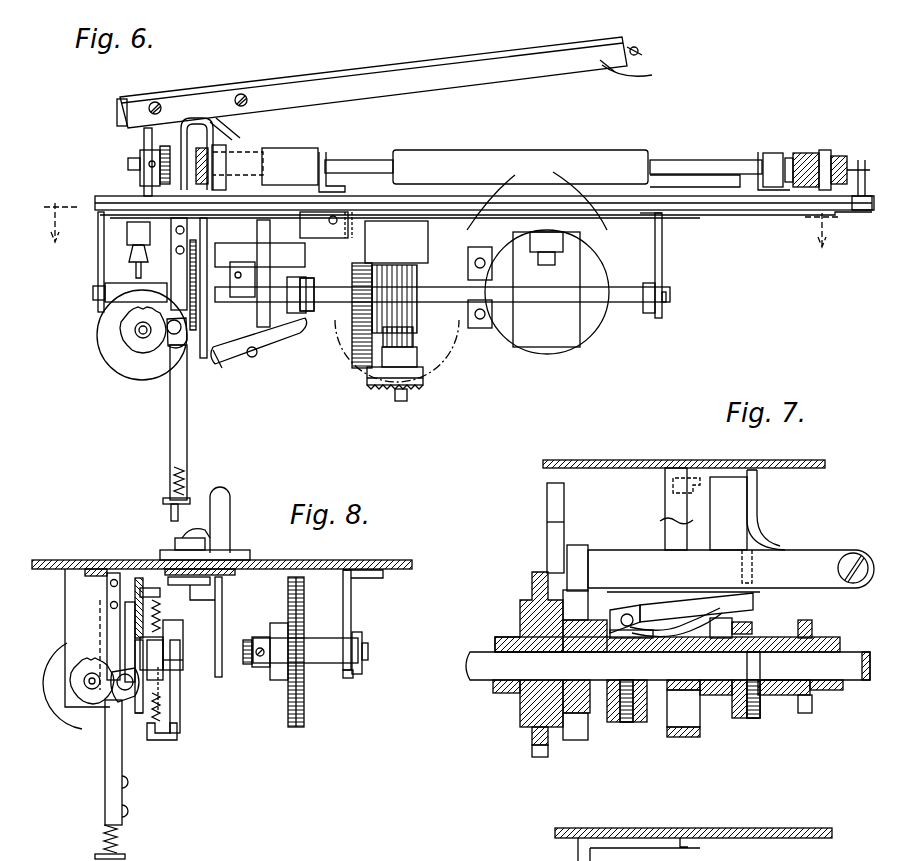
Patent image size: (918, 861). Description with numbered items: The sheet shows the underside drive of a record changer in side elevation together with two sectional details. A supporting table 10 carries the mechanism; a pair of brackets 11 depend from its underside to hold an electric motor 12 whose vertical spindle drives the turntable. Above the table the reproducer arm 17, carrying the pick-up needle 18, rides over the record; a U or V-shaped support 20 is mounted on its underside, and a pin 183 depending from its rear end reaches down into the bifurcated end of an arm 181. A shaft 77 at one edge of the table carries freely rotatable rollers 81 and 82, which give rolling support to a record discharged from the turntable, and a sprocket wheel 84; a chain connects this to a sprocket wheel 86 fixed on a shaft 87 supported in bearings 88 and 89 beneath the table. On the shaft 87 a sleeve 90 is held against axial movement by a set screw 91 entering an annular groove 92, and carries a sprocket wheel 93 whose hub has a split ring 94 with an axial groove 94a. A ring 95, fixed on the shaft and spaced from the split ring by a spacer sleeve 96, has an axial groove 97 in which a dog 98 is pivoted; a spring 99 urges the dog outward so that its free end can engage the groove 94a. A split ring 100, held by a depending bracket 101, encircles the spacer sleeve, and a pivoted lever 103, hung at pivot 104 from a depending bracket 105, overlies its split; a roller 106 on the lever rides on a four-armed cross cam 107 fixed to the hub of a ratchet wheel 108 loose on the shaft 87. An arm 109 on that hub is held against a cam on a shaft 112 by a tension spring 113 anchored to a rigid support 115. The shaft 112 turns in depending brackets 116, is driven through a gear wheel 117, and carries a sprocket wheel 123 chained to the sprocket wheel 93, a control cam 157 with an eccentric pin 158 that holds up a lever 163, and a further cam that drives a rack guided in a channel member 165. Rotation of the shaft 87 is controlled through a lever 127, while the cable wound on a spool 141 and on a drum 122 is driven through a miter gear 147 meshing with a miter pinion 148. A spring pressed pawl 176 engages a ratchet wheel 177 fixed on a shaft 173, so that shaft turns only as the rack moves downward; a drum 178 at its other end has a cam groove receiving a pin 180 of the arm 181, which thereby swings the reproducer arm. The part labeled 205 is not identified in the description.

In FIG. 6, the reproducer arm 17 is at (440, 72).
In FIG. 6, the pick-up needle 18 is at (637, 69).
In FIG. 6, the U or V-shaped support 20 is at (280, 142).
In FIG. 6, the supporting table 10 is at (305, 386).
In FIG. 8, the supporting table 10 is at (400, 562).
In FIG. 6, the brackets 11 is at (537, 194).
In FIG. 8, the brackets 11 is at (92, 633).
In FIG. 6, the electric motor 12 is at (590, 313).
In FIG. 6, the shaft 77 is at (675, 154).
In FIG. 6, the roller 81 is at (323, 160).
In FIG. 6, the roller 82 is at (565, 155).
In FIG. 6, the sprocket wheel 84 is at (140, 146).
In FIG. 6, the sprocket wheel 86 is at (110, 324).
In FIG. 6, the shaft 87 is at (507, 296).
In FIG. 7, the shaft 87 is at (857, 676).
In FIG. 6, the bearing 88 is at (100, 238).
In FIG. 6, the bearing 89 is at (662, 268).
In FIG. 7, the sleeve 90 is at (826, 692).
In FIG. 7, the set screw 91 is at (752, 682).
In FIG. 7, the annular groove 92 is at (762, 682).
In FIG. 6, the sprocket wheel 93 is at (296, 322).
In FIG. 7, the sprocket wheel 93 is at (806, 714).
In FIG. 7, the split ring 94 is at (736, 696).
In FIG. 7, the axial groove 94a is at (752, 624).
In FIG. 7, the ring 95 is at (645, 723).
In FIG. 7, the spacer sleeve 96 is at (718, 696).
In FIG. 7, the axial groove 97 is at (615, 605).
In FIG. 6, the dog 98 is at (307, 310).
In FIG. 7, the dog 98 is at (718, 600).
In FIG. 7, the spring 99 is at (650, 610).
In FIG. 7, the split ring 100 is at (692, 738).
In FIG. 7, the depending bracket 101 is at (672, 500).
In FIG. 6, the pivoted lever 103 is at (366, 368).
In FIG. 7, the pivoted lever 103 is at (784, 588).
In FIG. 7, the pivot 104 is at (851, 556).
In FIG. 7, the depending bracket 105 is at (752, 505).
In FIG. 7, the roller 106 is at (578, 553).
In FIG. 7, the four-armed cross cam 107 is at (580, 736).
In FIG. 6, the ratchet wheel 108 is at (207, 370).
In FIG. 7, the ratchet wheel 108 is at (538, 736).
In FIG. 6, the arm 109 is at (201, 360).
In FIG. 8, the arm 109 is at (138, 585).
In FIG. 7, the arm 109 is at (556, 548).
In FIG. 8, the shaft 112 is at (190, 640).
In FIG. 8, the tension spring 113 is at (137, 728).
In FIG. 8, the rigid support 115 is at (168, 728).
In FIG. 8, the depending brackets 116 is at (219, 600).
In FIG. 8, the gear wheel 117 is at (303, 706).
In FIG. 6, the drum 122 is at (405, 318).
In FIG. 8, the sprocket wheel 123 is at (250, 668).
In FIG. 6, the lever 127 is at (238, 362).
In FIG. 6, the spool 141 is at (386, 388).
In FIG. 6, the miter gear 147 is at (445, 362).
In FIG. 6, the miter pinion 148 is at (420, 378).
In FIG. 8, the control cam 157 is at (176, 702).
In FIG. 8, the laterally extending pin 158 is at (183, 682).
In FIG. 8, the lever 163 is at (200, 672).
In FIG. 6, the channel member 165 is at (173, 405).
In FIG. 6, the shaft 173 is at (135, 333).
In FIG. 8, the shaft 173 is at (86, 684).
In FIG. 6, the spring pressed pawl 176 is at (176, 345).
In FIG. 6, the ratchet wheel 177 is at (138, 348).
In FIG. 8, the drum 178 is at (50, 664).
In FIG. 6, the pin 180 is at (140, 296).
In FIG. 6, the arm 181 is at (133, 247).
In FIG. 6, the pin 183 is at (145, 133).
In FIG. 6, the block 205 is at (396, 243).